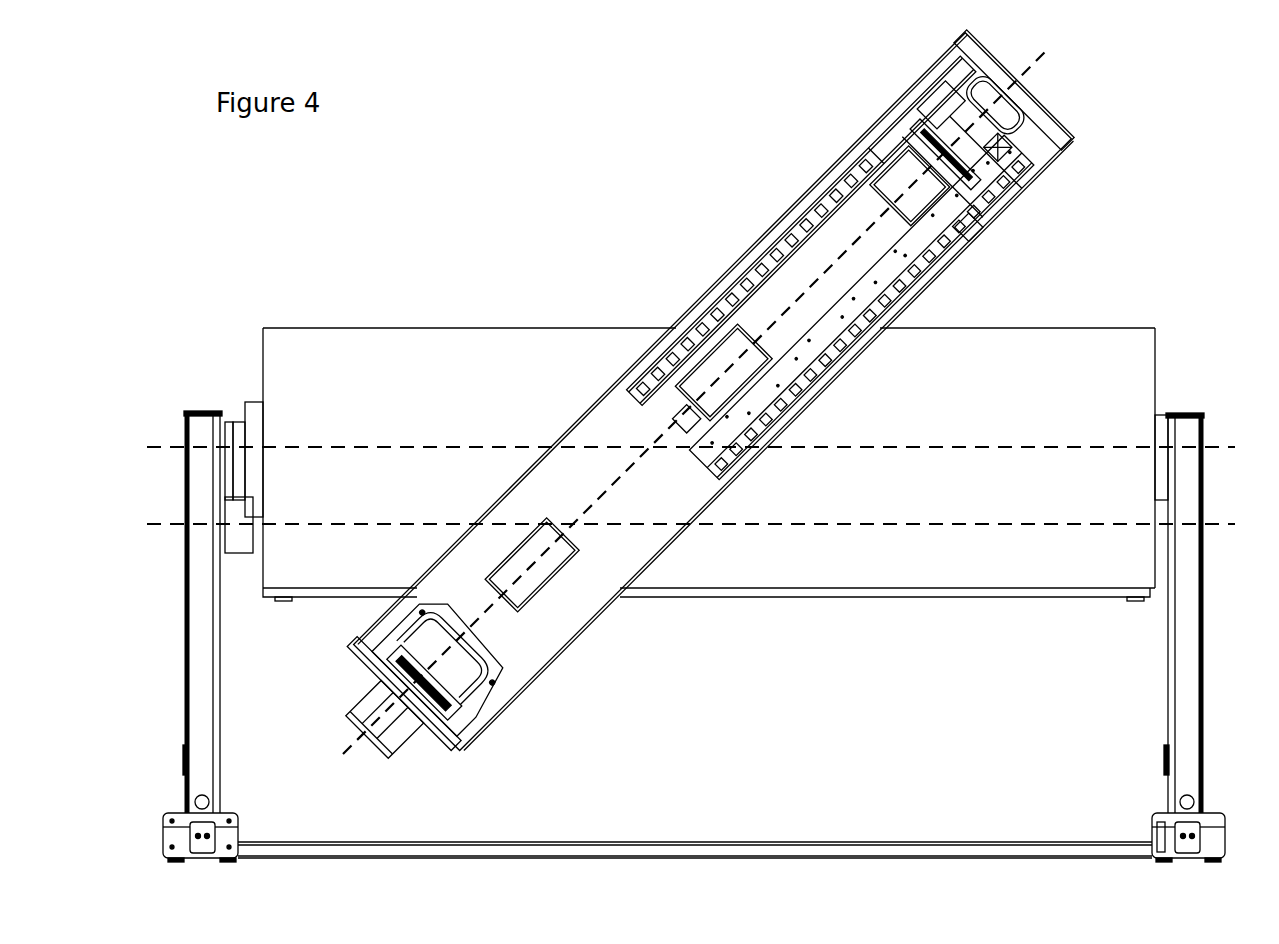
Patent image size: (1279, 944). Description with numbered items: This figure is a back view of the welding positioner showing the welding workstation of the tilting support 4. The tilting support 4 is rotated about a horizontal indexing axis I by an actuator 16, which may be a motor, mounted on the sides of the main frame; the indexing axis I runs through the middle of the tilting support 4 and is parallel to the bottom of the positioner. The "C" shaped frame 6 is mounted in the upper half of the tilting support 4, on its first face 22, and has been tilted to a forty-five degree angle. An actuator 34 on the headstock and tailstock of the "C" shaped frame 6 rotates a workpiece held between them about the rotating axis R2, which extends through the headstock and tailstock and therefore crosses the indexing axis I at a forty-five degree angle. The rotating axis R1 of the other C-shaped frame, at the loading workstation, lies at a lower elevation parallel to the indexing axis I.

The tilting support 4 is at (341, 338).
The "C" shaped frame 6 is at (714, 431).
The actuator 16 is at (1150, 404).
The first face 22 is at (541, 537).
The actuator 34 is at (238, 553).
The indexing axis I is at (700, 448).
The rotating axis R1 is at (708, 525).
The rotating axis R2 is at (680, 411).